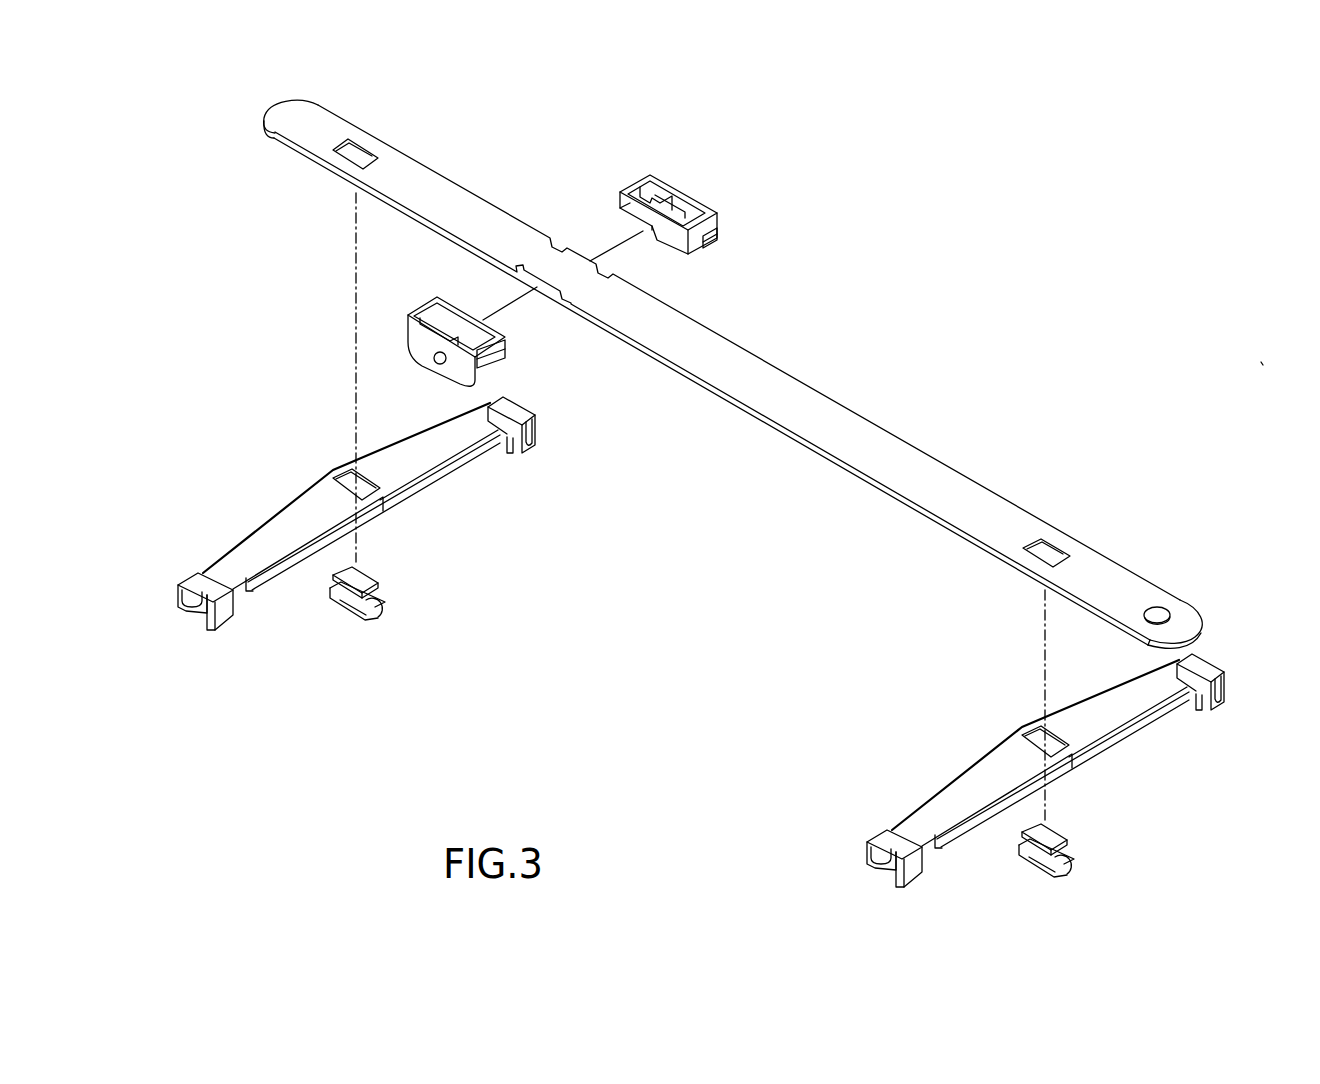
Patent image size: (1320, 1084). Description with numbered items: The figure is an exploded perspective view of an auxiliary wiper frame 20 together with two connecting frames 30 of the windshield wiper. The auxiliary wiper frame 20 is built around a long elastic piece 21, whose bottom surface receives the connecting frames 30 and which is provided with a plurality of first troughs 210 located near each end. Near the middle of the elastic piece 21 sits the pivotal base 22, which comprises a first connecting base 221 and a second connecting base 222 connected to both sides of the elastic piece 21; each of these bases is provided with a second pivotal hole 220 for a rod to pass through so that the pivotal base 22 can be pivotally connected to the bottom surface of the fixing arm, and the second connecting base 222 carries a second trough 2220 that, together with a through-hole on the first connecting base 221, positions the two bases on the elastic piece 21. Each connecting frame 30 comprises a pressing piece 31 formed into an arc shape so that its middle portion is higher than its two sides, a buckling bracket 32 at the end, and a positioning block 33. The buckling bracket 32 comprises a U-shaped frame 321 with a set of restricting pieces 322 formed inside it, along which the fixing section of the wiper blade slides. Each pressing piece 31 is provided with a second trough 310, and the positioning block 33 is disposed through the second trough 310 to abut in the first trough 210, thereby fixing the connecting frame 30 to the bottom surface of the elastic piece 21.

The auxiliary wiper frame 20 is at (733, 374).
The elastic piece 21 is at (780, 386).
The first trough 210 is at (360, 156).
The pivotal base 22 is at (693, 182).
The first connecting base 221 is at (432, 303).
The second connecting base 222 is at (668, 192).
The second trough 2220 is at (716, 249).
The second pivotal hole 220 is at (438, 326).
The connecting frame 30 is at (712, 642).
The pressing piece 31 is at (287, 523).
The second trough 310 is at (345, 470).
The buckling bracket 32 is at (228, 610).
The U-shaped frame 321 is at (173, 598).
The restricting piece 322 is at (192, 607).
The positioning block 33 is at (380, 617).